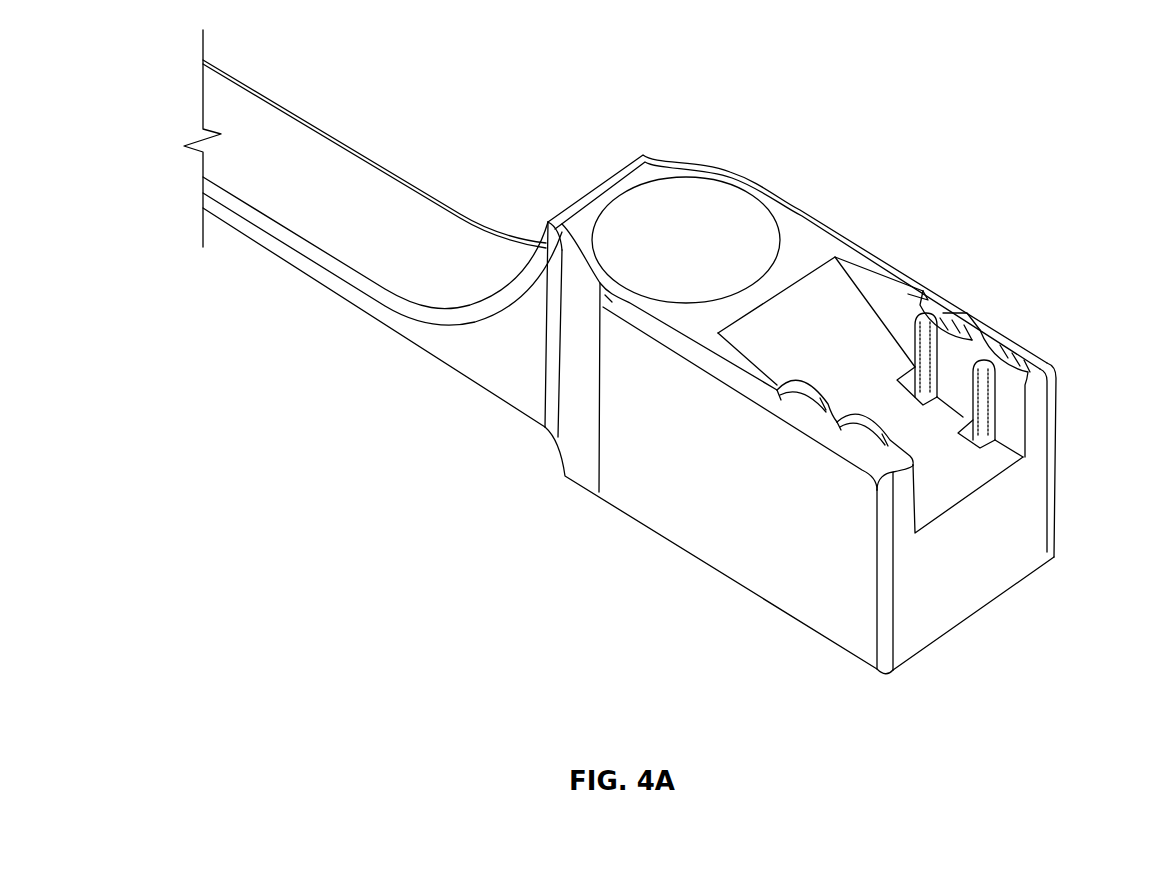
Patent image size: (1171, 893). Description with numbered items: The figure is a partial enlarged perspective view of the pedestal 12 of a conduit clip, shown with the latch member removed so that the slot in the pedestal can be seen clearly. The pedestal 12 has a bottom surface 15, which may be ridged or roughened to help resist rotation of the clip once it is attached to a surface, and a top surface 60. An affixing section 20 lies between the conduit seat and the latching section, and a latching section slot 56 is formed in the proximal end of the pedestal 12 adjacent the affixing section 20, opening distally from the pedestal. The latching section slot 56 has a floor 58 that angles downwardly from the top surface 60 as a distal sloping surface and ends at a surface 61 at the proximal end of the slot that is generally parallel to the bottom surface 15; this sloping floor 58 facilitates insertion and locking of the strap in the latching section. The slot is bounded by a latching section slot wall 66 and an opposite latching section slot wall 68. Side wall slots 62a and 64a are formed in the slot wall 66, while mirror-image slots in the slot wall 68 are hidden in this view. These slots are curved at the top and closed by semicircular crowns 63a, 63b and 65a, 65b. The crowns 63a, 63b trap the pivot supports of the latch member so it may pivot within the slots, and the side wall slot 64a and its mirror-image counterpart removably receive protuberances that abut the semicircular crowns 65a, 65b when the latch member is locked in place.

The pedestal 12 is at (1076, 538).
The bottom surface 15 is at (622, 515).
The affixing section 20 is at (718, 207).
The latching section slot 56 is at (967, 451).
The floor 58 is at (803, 341).
The top surface 60 is at (793, 223).
The surface 61 is at (933, 490).
The side wall slot 62a is at (920, 365).
The semicircular crown 63a is at (942, 305).
The semicircular crown 63b is at (807, 393).
The side wall slot 64a is at (983, 403).
The semicircular crown 65a is at (998, 338).
The semicircular crown 65b is at (830, 423).
The latching section slot wall 66 is at (1013, 412).
The latching section slot wall 68 is at (915, 498).